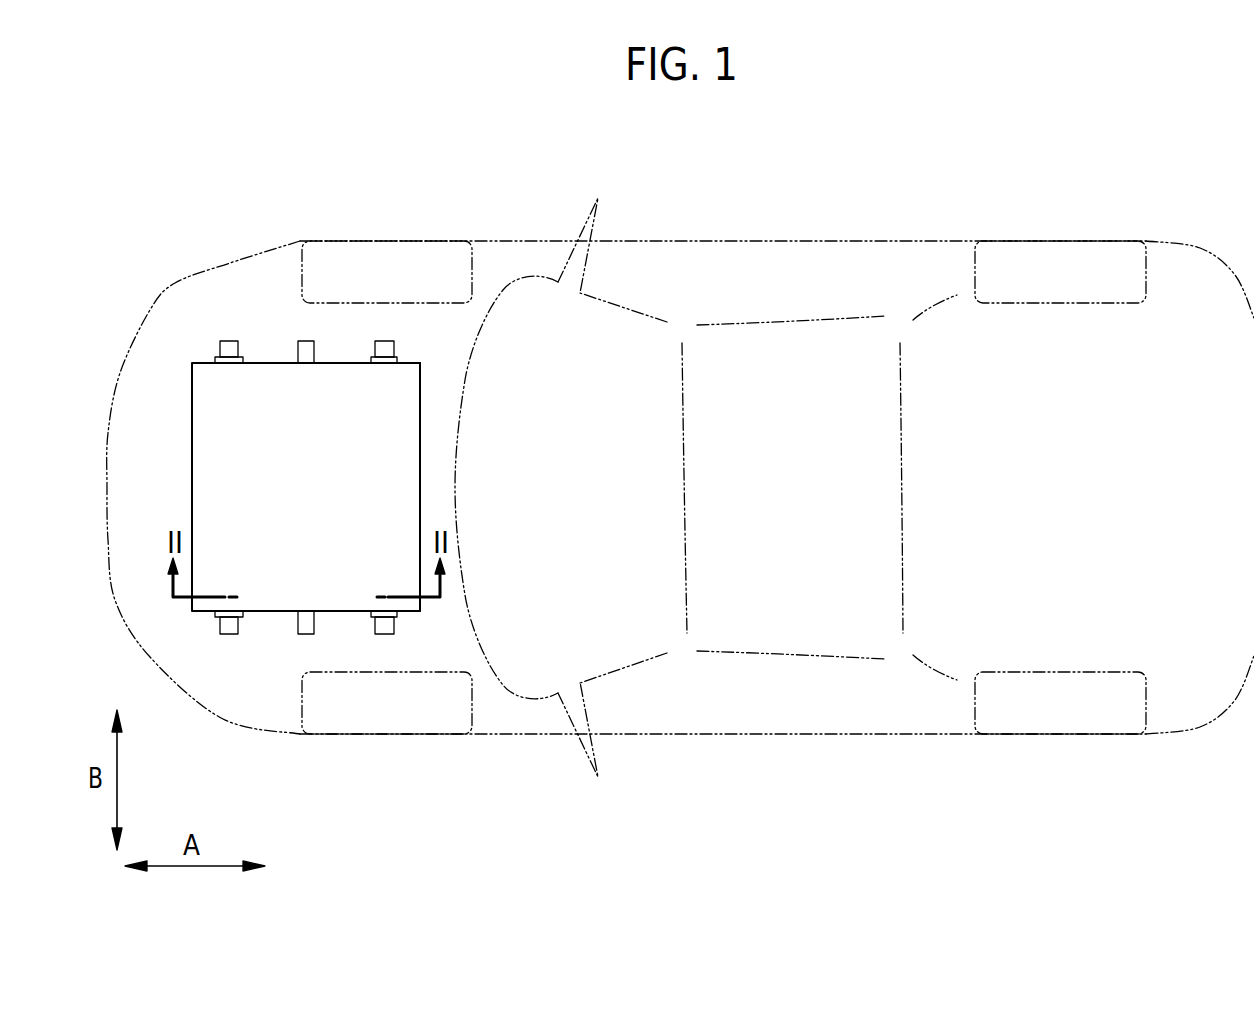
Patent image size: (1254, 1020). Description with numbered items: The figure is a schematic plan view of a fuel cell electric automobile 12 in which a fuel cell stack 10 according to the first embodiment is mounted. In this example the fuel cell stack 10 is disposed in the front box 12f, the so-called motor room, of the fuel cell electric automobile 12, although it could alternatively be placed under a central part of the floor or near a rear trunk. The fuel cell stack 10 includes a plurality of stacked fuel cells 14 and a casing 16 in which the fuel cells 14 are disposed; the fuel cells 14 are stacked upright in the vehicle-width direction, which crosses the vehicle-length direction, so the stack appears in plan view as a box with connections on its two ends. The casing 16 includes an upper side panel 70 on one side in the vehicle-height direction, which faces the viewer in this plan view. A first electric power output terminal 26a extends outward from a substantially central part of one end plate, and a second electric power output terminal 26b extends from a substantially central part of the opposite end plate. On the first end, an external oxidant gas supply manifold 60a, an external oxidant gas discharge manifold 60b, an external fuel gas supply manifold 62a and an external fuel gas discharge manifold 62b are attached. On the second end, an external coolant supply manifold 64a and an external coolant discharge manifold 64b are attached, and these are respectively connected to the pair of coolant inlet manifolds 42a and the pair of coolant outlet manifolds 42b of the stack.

The fuel cell stack 10 is at (339, 476).
The fuel cell electric automobile 12 is at (680, 466).
The front box 12f is at (183, 302).
The fuel cell 14 is at (385, 456).
The casing 16 is at (360, 487).
The first electric power output terminal 26a is at (310, 634).
The second electric power output terminal 26b is at (306, 341).
The coolant inlet manifold 42a is at (385, 341).
The coolant outlet manifold 42b is at (227, 341).
The external oxidant gas supply manifold 60a is at (473, 626).
The external oxidant gas discharge manifold 60b is at (235, 634).
The external fuel gas supply manifold 62a is at (397, 627).
The external fuel gas discharge manifold 62b is at (241, 654).
The external coolant supply manifold 64a is at (379, 309).
The external coolant discharge manifold 64b is at (239, 315).
The upper side panel 70 is at (412, 497).